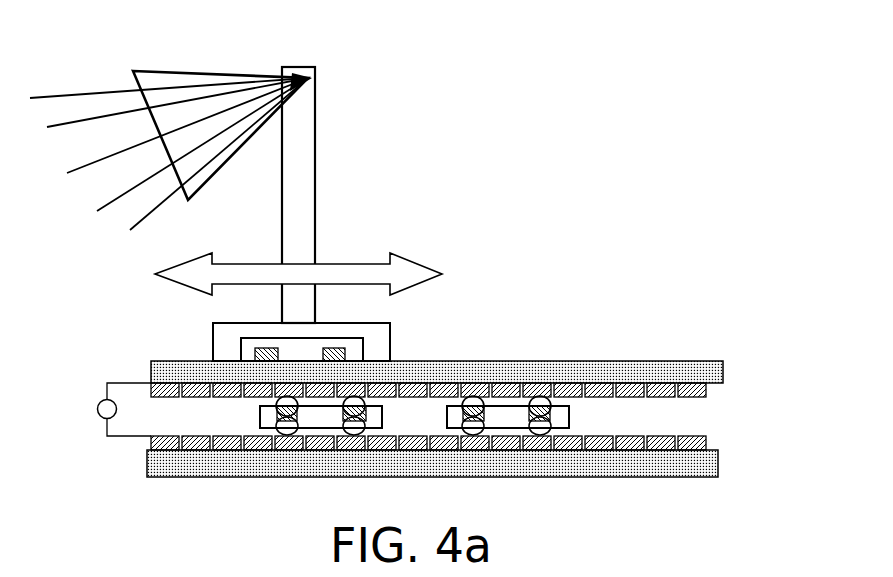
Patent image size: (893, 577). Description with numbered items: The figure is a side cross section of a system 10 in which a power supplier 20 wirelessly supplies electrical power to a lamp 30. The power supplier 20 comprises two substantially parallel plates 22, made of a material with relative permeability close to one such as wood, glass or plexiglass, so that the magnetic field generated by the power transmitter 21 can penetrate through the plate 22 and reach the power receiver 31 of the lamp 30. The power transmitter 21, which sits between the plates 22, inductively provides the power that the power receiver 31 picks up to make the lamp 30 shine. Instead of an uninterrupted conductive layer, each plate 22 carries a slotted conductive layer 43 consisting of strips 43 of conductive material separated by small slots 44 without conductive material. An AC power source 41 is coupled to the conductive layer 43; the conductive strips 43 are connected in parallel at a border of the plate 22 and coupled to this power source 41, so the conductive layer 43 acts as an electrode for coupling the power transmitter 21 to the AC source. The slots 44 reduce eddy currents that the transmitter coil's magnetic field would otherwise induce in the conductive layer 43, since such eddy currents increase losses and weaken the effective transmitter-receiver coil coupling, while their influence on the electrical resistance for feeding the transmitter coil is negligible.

The system 10 is at (627, 138).
The power supplier 20 is at (429, 390).
The power transmitter 21 is at (508, 413).
The plate 22 is at (462, 361).
The lamp 30 is at (194, 70).
The power receiver 31 is at (240, 347).
The AC power source 41 is at (97, 409).
The slotted conductive layer 43 is at (150, 439).
The slot 44 is at (647, 370).